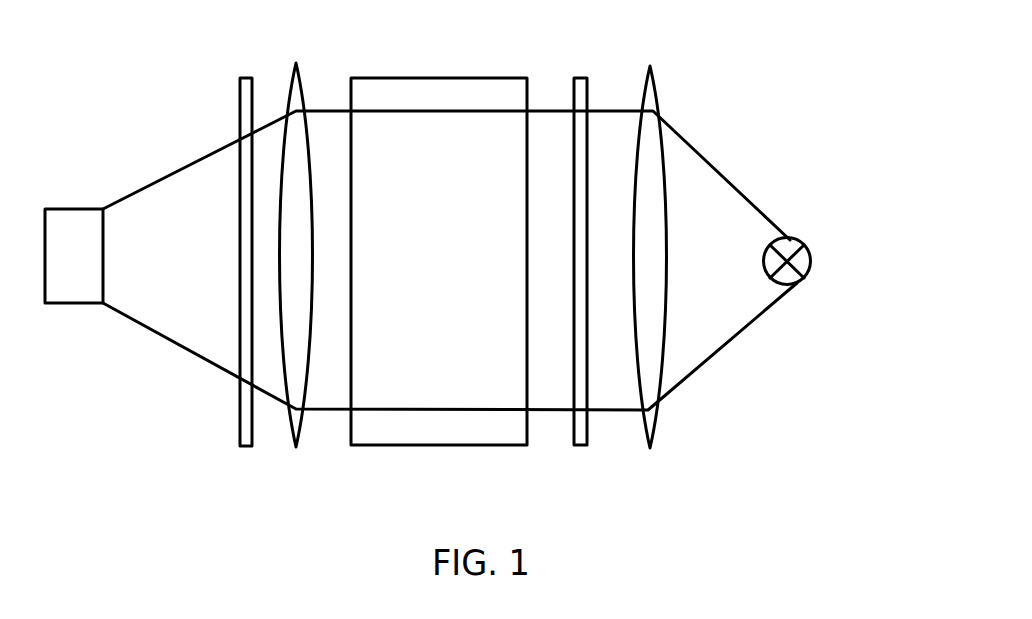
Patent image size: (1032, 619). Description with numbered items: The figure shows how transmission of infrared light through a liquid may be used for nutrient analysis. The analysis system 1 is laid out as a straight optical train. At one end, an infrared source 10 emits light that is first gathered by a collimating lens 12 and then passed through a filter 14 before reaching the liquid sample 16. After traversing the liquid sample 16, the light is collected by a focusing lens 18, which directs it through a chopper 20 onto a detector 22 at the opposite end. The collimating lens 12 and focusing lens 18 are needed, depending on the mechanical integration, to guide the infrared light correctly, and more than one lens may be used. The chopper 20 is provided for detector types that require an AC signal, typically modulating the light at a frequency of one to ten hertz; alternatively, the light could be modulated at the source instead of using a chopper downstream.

The analysis system 1 is at (808, 158).
The infrared source 10 is at (790, 238).
The collimating lens 12 is at (647, 66).
The filter 14 is at (574, 78).
The liquid sample 16 is at (408, 78).
The focusing lens 18 is at (294, 78).
The chopper 20 is at (240, 78).
The detector 22 is at (64, 209).